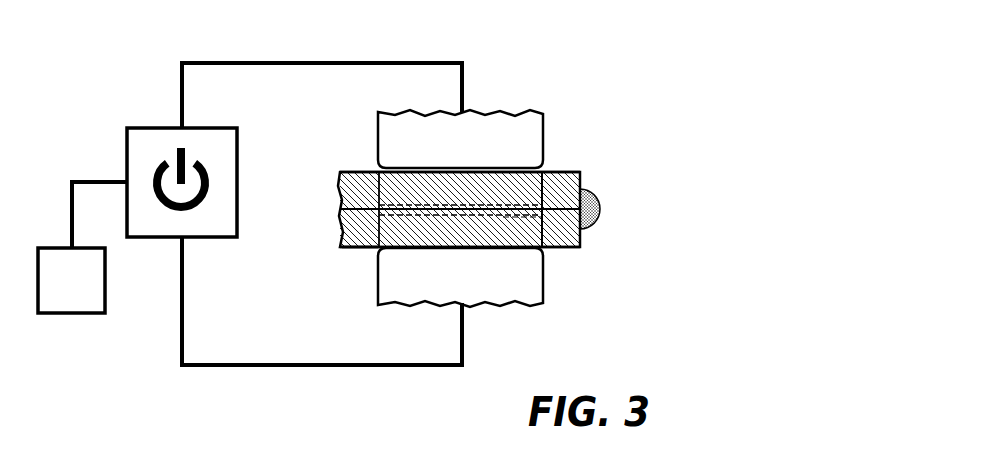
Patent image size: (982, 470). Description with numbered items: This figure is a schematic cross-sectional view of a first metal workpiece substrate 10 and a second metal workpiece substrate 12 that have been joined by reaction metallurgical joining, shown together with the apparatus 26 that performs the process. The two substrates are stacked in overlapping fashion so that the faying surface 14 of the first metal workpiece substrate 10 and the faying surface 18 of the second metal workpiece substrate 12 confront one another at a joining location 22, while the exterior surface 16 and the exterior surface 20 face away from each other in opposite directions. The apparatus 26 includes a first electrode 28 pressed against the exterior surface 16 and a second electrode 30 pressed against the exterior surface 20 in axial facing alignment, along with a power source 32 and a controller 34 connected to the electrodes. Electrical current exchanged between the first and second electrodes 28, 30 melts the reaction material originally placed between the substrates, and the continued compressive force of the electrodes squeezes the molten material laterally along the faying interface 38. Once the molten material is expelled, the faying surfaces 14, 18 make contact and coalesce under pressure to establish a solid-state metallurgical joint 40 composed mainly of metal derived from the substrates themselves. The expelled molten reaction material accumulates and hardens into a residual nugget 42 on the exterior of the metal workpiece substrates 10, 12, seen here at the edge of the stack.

The first metal workpiece substrate 10 is at (560, 186).
The second metal workpiece substrate 12 is at (565, 232).
The faying surface 14 is at (343, 215).
The exterior surface 16 is at (362, 172).
The faying surface 18 is at (377, 208).
The exterior surface 20 is at (368, 248).
The joining location 22 is at (554, 178).
The apparatus 26 is at (137, 67).
The first electrode 28 is at (449, 150).
The second electrode 30 is at (449, 293).
The power source 32 is at (212, 128).
The controller 34 is at (59, 293).
The faying interface 38 is at (554, 212).
The solid-state metallurgical joint 40 is at (503, 217).
The residual nugget 42 is at (596, 208).